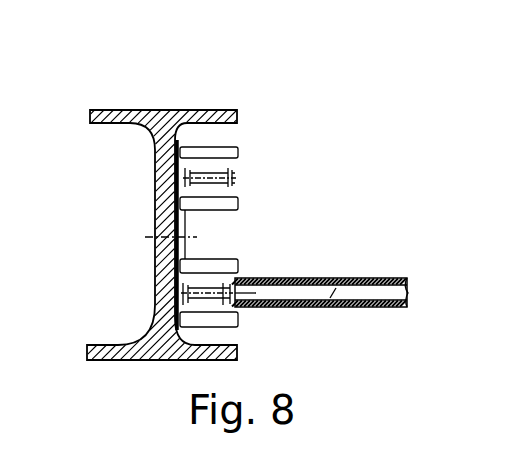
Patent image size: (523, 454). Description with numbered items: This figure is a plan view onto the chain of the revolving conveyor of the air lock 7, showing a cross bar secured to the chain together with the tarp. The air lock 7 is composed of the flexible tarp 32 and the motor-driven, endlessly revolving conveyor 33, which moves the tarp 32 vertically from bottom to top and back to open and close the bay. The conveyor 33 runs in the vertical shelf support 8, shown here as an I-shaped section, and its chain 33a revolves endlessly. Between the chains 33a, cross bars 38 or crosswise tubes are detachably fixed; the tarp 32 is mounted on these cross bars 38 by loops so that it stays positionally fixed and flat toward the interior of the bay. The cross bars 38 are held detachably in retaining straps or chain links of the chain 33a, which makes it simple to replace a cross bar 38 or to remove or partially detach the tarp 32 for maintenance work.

The vertical shelf support 8 is at (138, 110).
The conveyor 33 is at (234, 178).
The chain 33a is at (180, 285).
The air lock 7 is at (329, 297).
The tarp 32 is at (358, 308).
The cross bar 38 is at (332, 293).